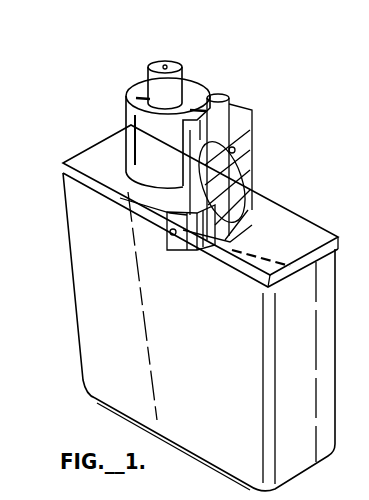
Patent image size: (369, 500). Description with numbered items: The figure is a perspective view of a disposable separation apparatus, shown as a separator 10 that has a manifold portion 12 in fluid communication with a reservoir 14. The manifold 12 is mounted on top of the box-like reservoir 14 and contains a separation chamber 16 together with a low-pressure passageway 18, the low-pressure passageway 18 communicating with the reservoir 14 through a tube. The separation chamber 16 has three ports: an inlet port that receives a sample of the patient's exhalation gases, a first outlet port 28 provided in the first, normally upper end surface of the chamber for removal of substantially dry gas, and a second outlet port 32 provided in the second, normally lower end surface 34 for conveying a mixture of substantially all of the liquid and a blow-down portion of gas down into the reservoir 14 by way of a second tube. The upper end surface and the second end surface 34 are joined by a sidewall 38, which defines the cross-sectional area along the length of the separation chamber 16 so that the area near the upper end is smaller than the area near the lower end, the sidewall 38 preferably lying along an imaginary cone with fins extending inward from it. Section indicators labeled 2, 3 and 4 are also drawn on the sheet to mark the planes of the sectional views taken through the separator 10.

The separator 10 is at (308, 154).
The manifold portion 12 is at (240, 131).
The reservoir 14 is at (313, 446).
The separation chamber 16 is at (230, 162).
The low-pressure passageway 18 is at (165, 66).
The first outlet port 28 is at (232, 108).
The second outlet port 32 is at (262, 201).
The second end surface 34 is at (236, 188).
The sidewall 38 is at (195, 179).
The section line 2- 2 is at (58, 123).
The section line 3- 3 is at (222, 62).
The section line 4- 4 is at (365, 212).